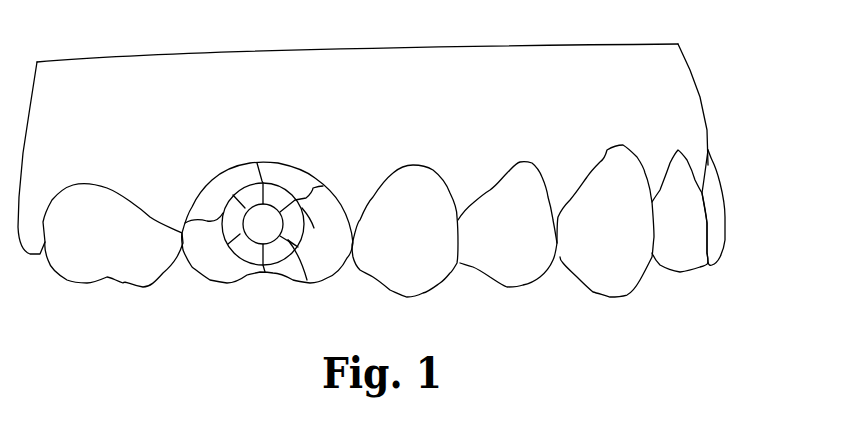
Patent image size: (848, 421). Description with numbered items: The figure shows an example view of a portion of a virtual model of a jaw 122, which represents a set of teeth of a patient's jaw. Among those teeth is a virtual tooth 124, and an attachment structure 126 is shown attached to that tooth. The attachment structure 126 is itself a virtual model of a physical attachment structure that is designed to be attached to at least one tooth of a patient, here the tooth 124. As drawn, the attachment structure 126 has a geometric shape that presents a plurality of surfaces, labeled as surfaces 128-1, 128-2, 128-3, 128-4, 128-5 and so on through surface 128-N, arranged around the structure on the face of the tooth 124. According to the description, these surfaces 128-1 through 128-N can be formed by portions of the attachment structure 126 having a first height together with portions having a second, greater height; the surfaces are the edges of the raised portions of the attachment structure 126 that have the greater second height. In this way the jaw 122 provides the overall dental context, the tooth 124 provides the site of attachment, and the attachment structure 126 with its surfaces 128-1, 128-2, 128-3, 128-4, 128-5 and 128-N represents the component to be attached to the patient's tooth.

The virtual model of a jaw 122 is at (733, 37).
The virtual tooth 124 is at (217, 272).
The attachment structure 126 is at (306, 173).
The surface 128-N is at (258, 167).
The surface 128-1 is at (329, 200).
The surface 128-2 is at (307, 280).
The surface 128-3 is at (265, 272).
The surface 128-4 is at (187, 219).
The surface 128-5 is at (222, 201).